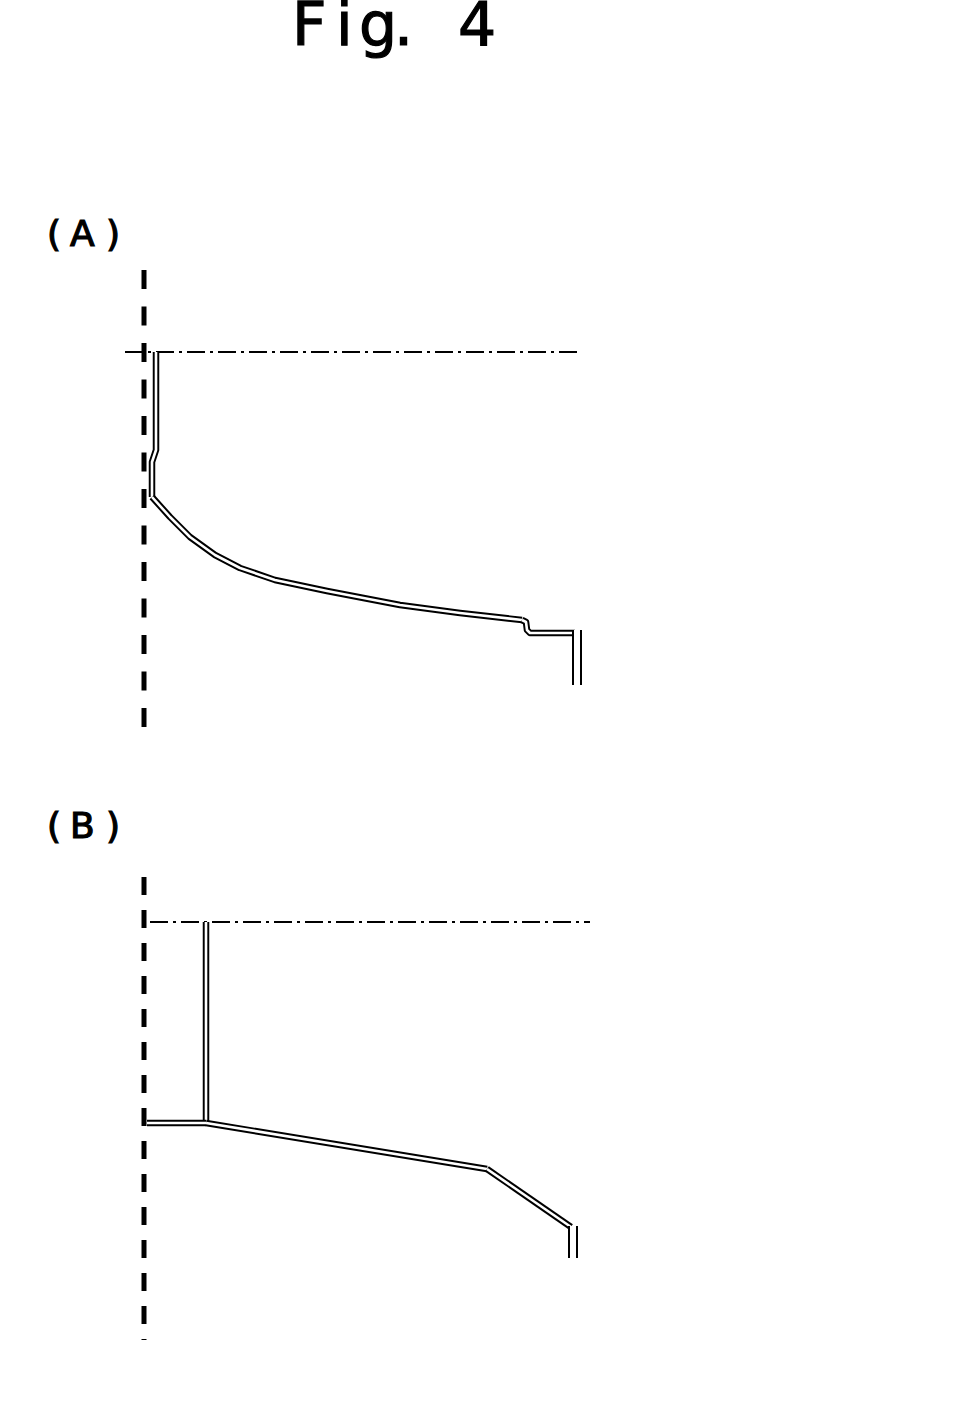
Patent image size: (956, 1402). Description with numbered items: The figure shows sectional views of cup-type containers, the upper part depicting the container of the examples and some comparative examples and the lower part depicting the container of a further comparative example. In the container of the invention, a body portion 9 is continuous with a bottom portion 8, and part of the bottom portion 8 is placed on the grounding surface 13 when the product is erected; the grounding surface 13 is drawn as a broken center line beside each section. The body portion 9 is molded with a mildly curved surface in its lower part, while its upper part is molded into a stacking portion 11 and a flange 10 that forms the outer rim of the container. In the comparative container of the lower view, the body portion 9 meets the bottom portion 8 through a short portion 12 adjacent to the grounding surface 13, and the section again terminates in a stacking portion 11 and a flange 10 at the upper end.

The bottom portion 8 is at (156, 407).
The body portion 9 is at (274, 580).
The flange 10 is at (582, 658).
The stacking portion 11 is at (553, 628).
The flange portion 12 is at (170, 1125).
The grounding surface 13 is at (143, 656).